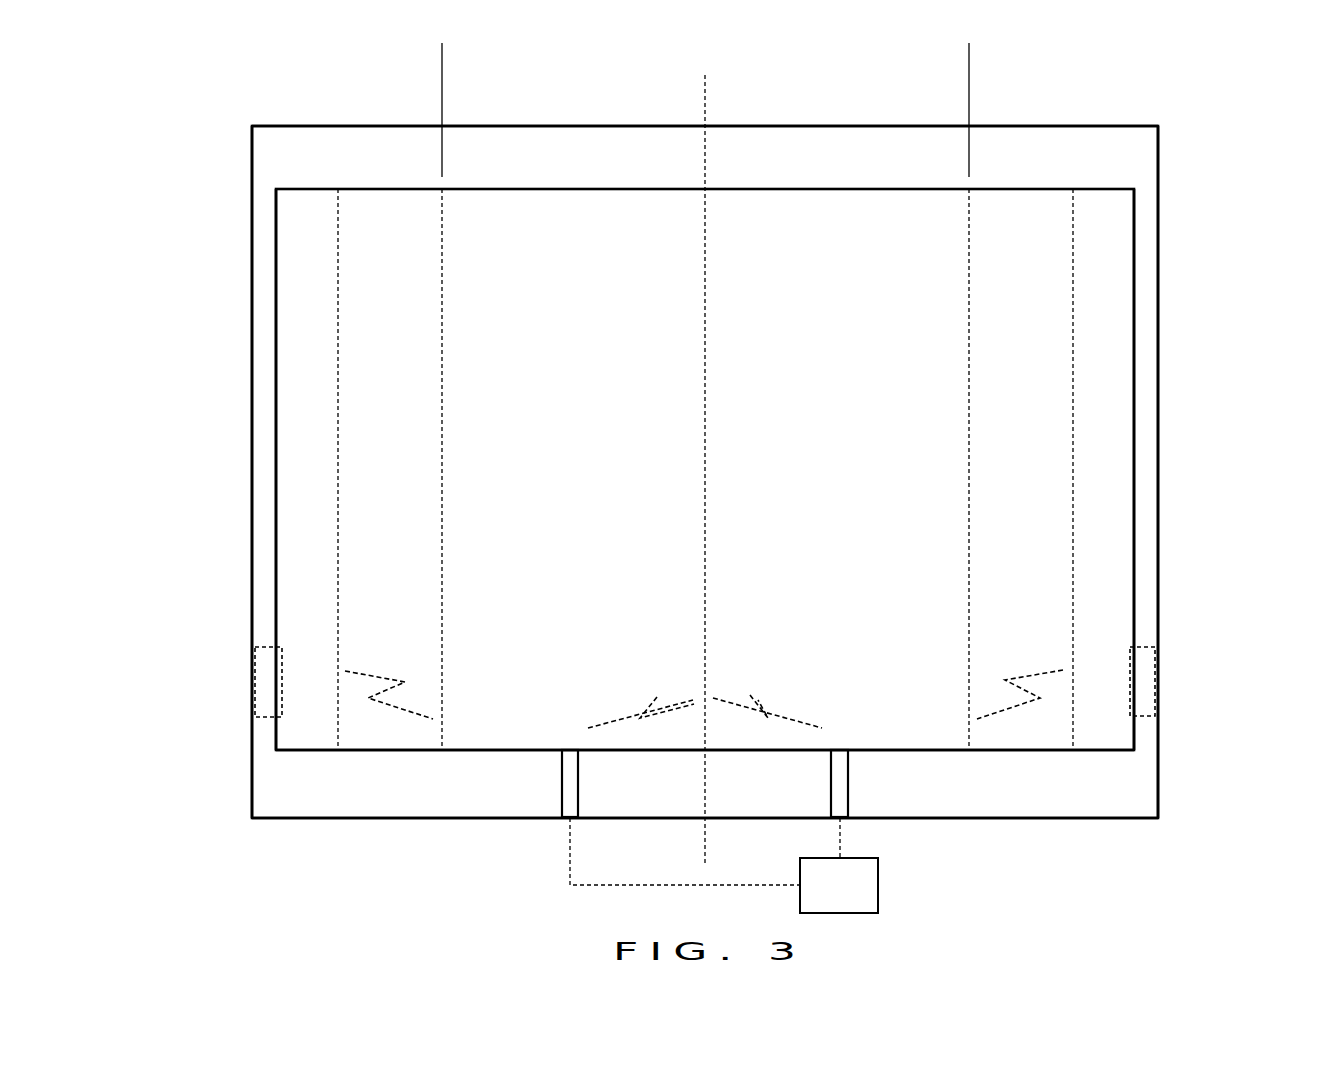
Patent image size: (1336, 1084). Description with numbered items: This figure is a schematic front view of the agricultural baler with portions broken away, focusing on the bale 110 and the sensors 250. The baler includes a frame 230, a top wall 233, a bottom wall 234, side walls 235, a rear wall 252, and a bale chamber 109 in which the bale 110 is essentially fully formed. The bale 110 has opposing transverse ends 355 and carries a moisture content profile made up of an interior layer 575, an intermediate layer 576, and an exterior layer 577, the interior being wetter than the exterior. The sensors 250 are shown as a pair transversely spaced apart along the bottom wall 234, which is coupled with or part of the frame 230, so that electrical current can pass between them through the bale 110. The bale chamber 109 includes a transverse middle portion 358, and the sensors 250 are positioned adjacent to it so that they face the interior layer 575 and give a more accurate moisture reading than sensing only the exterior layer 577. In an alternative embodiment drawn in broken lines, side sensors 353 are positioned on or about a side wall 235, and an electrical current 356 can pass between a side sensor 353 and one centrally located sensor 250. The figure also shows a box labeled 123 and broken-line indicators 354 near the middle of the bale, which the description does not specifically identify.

The bale chamber 109 is at (1146, 294).
The bale 110 is at (835, 228).
The controller 123 is at (860, 893).
The frame 230 is at (262, 791).
The top wall 233 is at (326, 126).
The bottom wall 234 is at (365, 808).
The side walls 235 is at (252, 460).
The sensors 250 is at (578, 785).
The rear wall 252 is at (1127, 792).
The sensors 353 is at (252, 680).
The central hinge indicators 354 is at (655, 698).
The opposing transverse ends 355 is at (276, 300).
The electrical current 356 is at (373, 672).
The transverse middle portion 358 is at (969, 55).
The interior layer 575 is at (512, 750).
The intermediate layer 576 is at (1008, 750).
The exterior layer 577 is at (1098, 750).